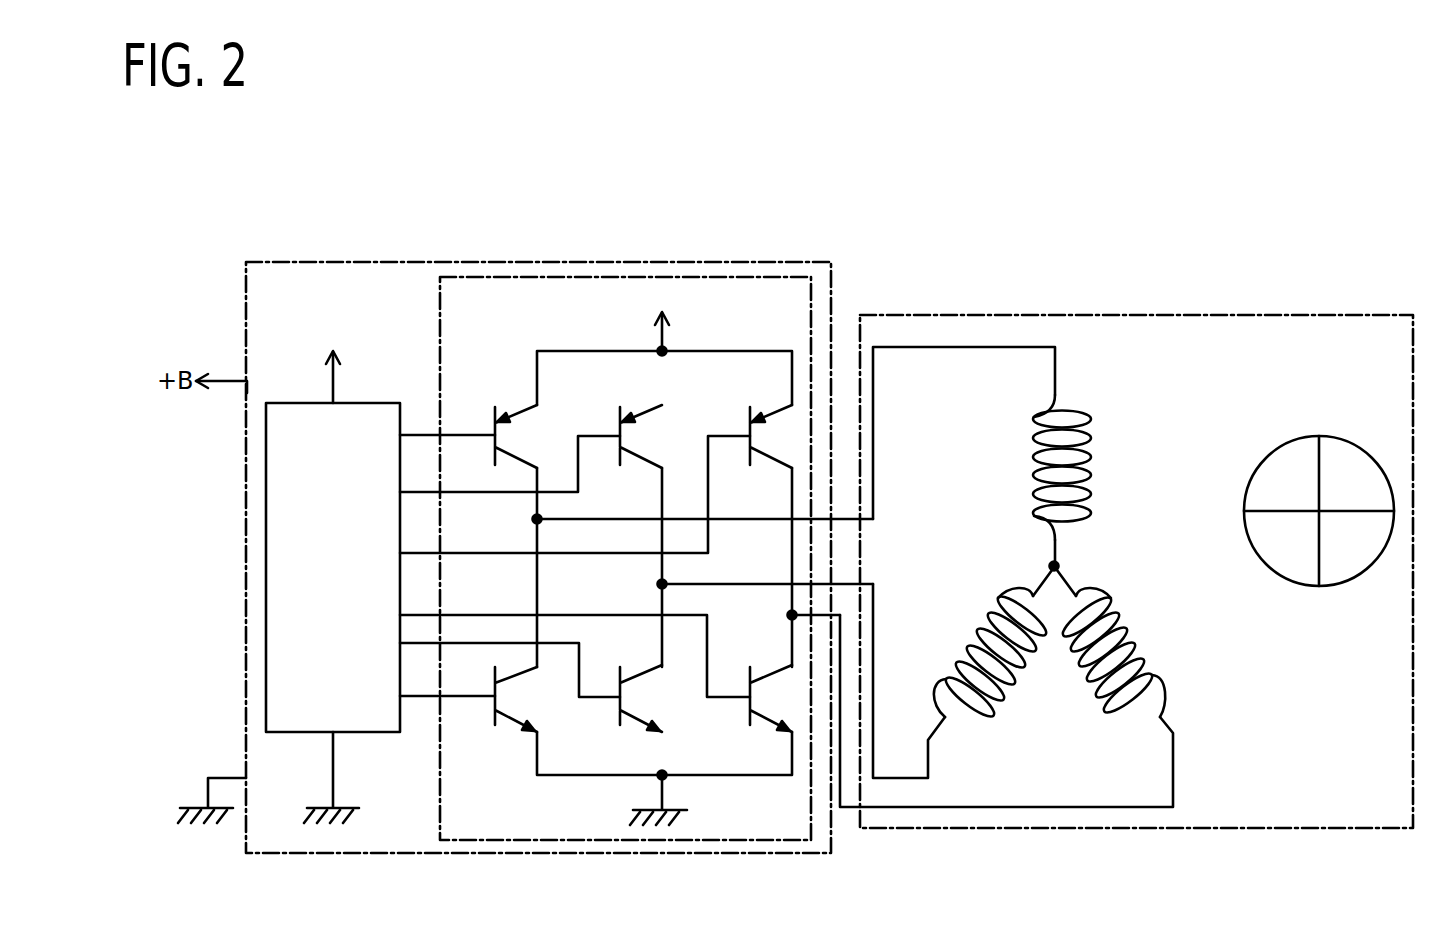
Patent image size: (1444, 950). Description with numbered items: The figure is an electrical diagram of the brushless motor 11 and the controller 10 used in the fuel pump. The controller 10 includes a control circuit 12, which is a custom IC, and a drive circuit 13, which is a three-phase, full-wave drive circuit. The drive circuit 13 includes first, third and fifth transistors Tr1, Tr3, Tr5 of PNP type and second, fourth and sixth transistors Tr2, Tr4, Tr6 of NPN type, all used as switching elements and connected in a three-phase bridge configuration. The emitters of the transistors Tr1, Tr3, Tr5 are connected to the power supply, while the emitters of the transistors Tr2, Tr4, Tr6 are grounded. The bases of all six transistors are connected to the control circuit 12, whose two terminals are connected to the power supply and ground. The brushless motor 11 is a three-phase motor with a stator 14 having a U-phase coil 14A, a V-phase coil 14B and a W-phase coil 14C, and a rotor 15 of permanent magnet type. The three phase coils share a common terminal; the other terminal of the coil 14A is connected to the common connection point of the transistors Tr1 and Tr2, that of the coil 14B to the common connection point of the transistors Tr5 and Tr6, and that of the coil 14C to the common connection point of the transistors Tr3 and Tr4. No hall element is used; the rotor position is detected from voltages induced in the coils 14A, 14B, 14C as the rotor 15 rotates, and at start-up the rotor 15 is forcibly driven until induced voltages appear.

The controller 10 is at (792, 261).
The brushless motor 11 is at (1177, 315).
The control circuit 12 is at (266, 668).
The drive circuit 13 is at (555, 842).
The stator 14 is at (1157, 428).
The U-phase coil 14A is at (1033, 431).
The V-phase coil 14B is at (1168, 685).
The W-phase coil 14C is at (1004, 689).
The rotor 15 is at (1342, 438).
The first transistor Tr1 is at (495, 410).
The second transistor Tr2 is at (495, 726).
The third transistor Tr3 is at (620, 410).
The fourth transistor Tr4 is at (619, 727).
The fifth transistor Tr5 is at (750, 410).
The sixth transistor Tr6 is at (750, 727).